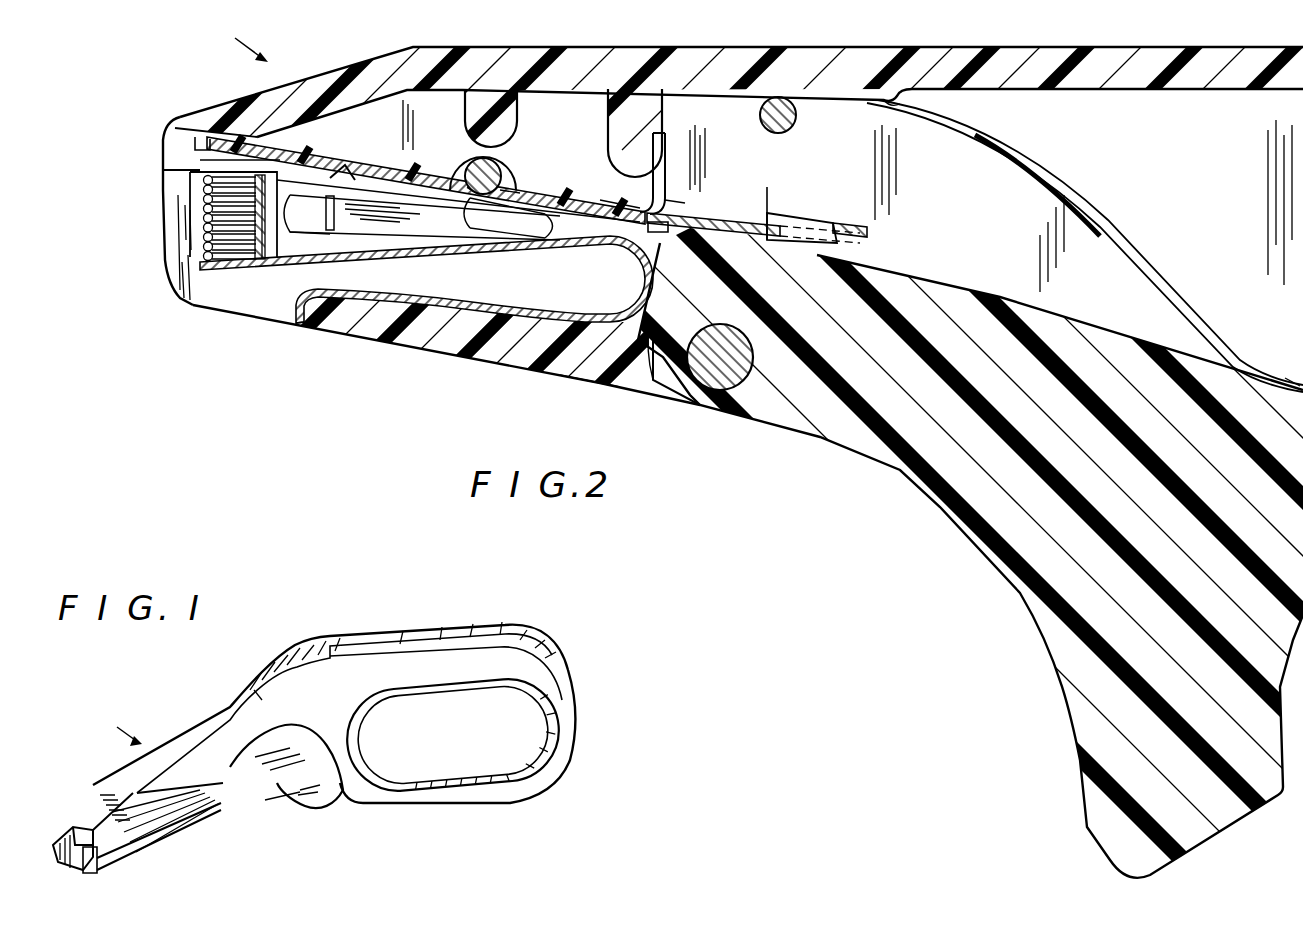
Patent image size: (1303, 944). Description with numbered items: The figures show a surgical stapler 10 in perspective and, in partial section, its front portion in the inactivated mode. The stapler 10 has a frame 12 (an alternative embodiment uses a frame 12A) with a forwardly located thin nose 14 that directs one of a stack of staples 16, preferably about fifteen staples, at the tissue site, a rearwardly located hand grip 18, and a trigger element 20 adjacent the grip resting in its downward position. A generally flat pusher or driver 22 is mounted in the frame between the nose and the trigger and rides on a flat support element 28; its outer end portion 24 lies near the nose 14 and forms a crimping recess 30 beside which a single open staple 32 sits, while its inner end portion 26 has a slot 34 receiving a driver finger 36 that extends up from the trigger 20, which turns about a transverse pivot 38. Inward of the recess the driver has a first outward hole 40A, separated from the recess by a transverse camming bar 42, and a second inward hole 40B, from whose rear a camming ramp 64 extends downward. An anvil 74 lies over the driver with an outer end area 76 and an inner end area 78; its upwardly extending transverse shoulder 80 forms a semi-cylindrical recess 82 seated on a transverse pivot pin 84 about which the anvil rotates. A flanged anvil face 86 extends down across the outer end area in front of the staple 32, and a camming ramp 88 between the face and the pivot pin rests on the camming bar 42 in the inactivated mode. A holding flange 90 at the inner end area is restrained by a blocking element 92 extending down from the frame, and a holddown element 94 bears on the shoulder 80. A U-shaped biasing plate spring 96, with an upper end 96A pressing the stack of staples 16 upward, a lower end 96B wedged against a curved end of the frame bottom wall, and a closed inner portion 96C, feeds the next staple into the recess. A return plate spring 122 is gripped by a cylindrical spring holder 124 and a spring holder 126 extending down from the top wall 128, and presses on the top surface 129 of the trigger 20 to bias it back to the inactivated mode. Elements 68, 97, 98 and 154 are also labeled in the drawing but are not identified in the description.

In FIG. 2, the surgical stapler 10 is at (240, 39).
In FIG. 1, the surgical stapler 10 is at (115, 727).
In FIG. 2, the frame 12 is at (690, 47).
In FIG. 1, the frame 12 is at (210, 705).
In FIG. 1, the frame 12A is at (258, 688).
In FIG. 2, the thin nose 14 is at (178, 120).
In FIG. 1, the thin nose 14 is at (72, 826).
In FIG. 2, the stack of staples 16 is at (305, 219).
In FIG. 1, the stack of staples 16 is at (84, 872).
In FIG. 1, the hand grip 18 is at (555, 678).
In FIG. 2, the trigger element 20 is at (815, 437).
In FIG. 1, the trigger element 20 is at (290, 775).
In FIG. 2, the driver 22 is at (690, 215).
In FIG. 2, the outer end portion 24 is at (205, 190).
In FIG. 2, the inner end portion 26 is at (855, 222).
In FIG. 2, the flat support element 28 is at (380, 216).
In FIG. 2, the crimping recess 30 is at (295, 185).
In FIG. 2, the open staple 32 is at (200, 180).
In FIG. 2, the slot 34 is at (767, 187).
In FIG. 2, the driver finger 36 is at (820, 213).
In FIG. 2, the pivot 38 is at (712, 388).
In FIG. 2, the first outward hole 40A is at (468, 203).
In FIG. 2, the second inward hole 40B is at (552, 232).
In FIG. 2, the transverse camming bar 42 is at (330, 215).
In FIG. 2, the camming ramp 64 is at (660, 230).
In FIG. 2, the slot 68 is at (480, 245).
In FIG. 2, the anvil 74 is at (597, 198).
In FIG. 2, the outer end area 76 is at (200, 137).
In FIG. 2, the inner end area 78 is at (672, 205).
In FIG. 2, the transverse shoulder 80 is at (500, 165).
In FIG. 2, the semi-cylindrical recess 82 is at (515, 186).
In FIG. 2, the pivot pin 84 is at (470, 170).
In FIG. 2, the flanged anvil face 86 is at (200, 160).
In FIG. 2, the camming ramp 88 is at (337, 180).
In FIG. 2, the holding flange 90 is at (672, 142).
In FIG. 2, the blocking element 92 is at (628, 135).
In FIG. 2, the holddown element 94 is at (508, 118).
In FIG. 2, the biasing plate spring 96 is at (490, 304).
In FIG. 2, the upper end 96A is at (193, 305).
In FIG. 2, the lower end 96B is at (298, 325).
In FIG. 2, the inner portion 96C is at (662, 356).
In FIG. 2, the lower wall 97 is at (325, 318).
In FIG. 2, the bottom surface 98 is at (590, 380).
In FIG. 2, the return plate spring 122 is at (1100, 225).
In FIG. 2, the spring holder 124 is at (793, 123).
In FIG. 2, the spring holder 126 is at (905, 105).
In FIG. 2, the top wall 128 is at (1098, 47).
In FIG. 2, the top surface 129 is at (1300, 376).
In FIG. 2, the rear portion 154 is at (1291, 47).